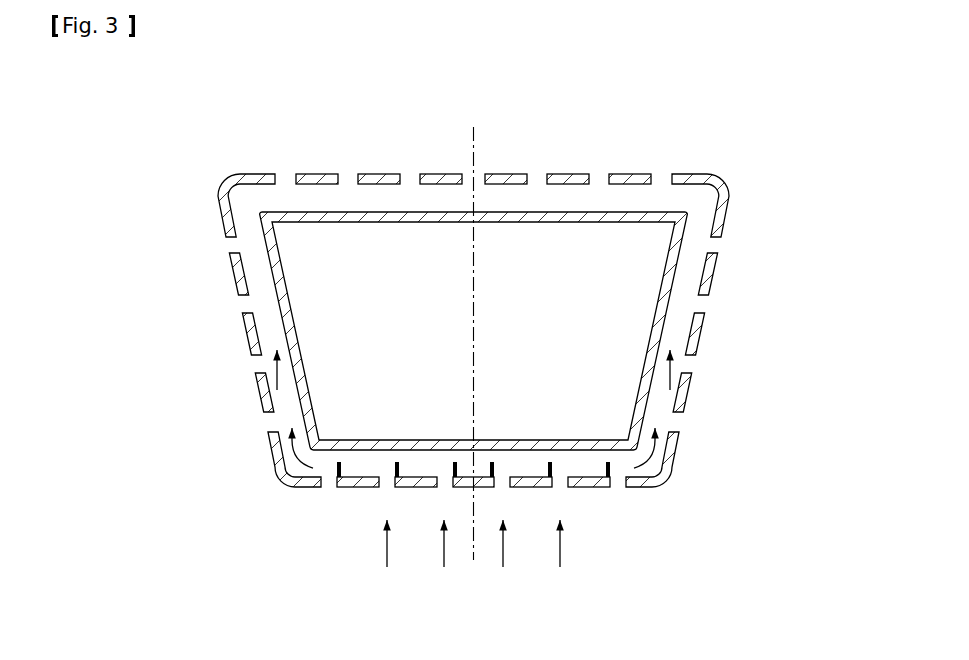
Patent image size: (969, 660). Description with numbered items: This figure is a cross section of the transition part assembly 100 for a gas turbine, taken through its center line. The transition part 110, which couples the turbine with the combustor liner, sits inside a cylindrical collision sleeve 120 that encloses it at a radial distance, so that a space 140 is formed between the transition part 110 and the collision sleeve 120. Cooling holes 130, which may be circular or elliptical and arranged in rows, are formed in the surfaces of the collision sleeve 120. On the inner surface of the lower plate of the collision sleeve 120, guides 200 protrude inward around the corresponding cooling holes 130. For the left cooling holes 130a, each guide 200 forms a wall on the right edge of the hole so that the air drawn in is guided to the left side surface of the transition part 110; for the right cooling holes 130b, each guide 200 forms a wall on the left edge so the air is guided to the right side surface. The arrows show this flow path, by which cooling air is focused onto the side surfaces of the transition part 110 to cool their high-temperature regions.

The transition part assembly 100 is at (197, 137).
The transition part 110 is at (577, 217).
The collision sleeve 120 is at (729, 176).
The cooling holes 130 is at (710, 245).
The left cooling holes 130a is at (434, 464).
The right cooling holes 130b is at (514, 464).
The space 140 is at (257, 283).
The guides 200 is at (447, 459).